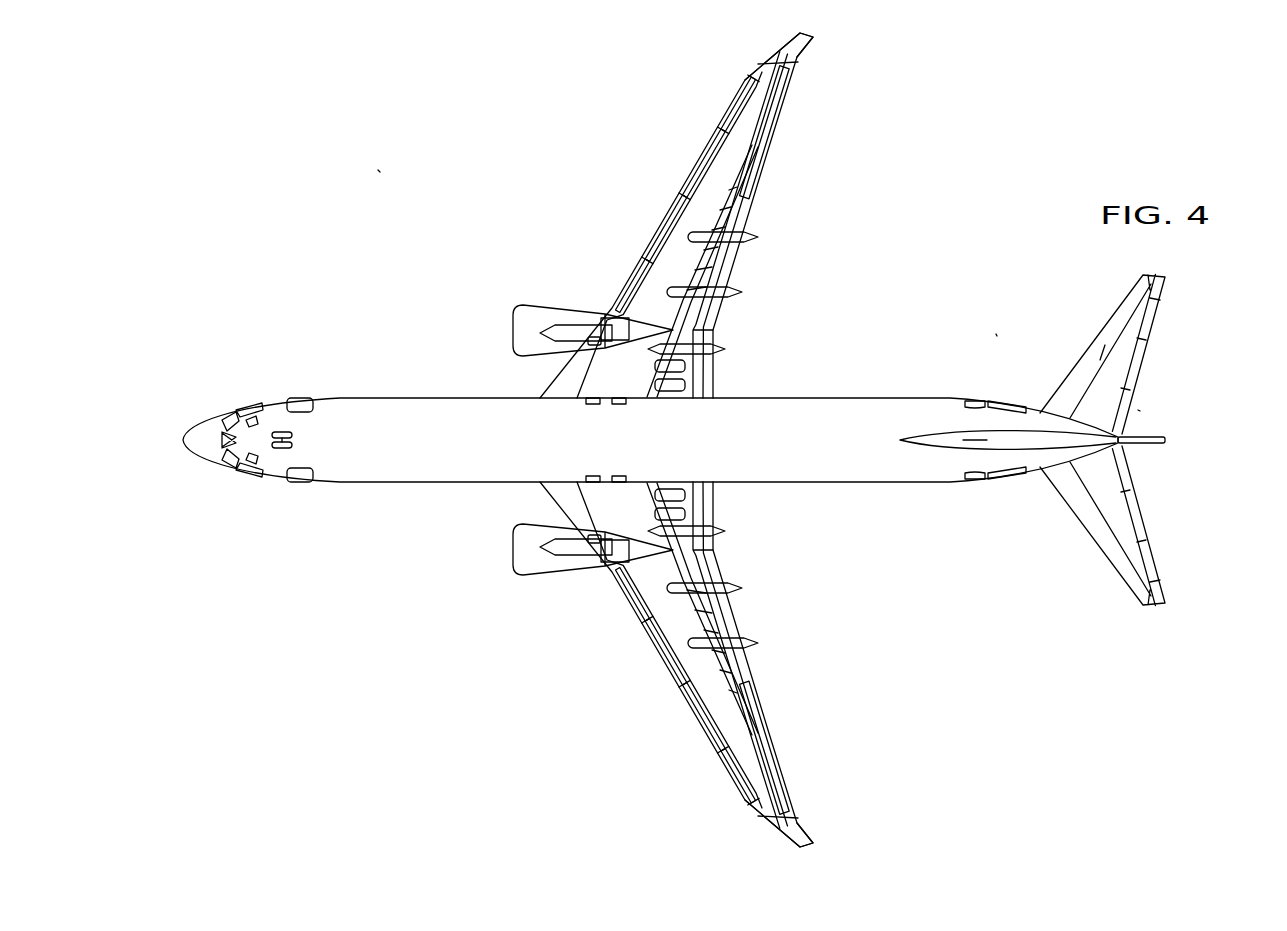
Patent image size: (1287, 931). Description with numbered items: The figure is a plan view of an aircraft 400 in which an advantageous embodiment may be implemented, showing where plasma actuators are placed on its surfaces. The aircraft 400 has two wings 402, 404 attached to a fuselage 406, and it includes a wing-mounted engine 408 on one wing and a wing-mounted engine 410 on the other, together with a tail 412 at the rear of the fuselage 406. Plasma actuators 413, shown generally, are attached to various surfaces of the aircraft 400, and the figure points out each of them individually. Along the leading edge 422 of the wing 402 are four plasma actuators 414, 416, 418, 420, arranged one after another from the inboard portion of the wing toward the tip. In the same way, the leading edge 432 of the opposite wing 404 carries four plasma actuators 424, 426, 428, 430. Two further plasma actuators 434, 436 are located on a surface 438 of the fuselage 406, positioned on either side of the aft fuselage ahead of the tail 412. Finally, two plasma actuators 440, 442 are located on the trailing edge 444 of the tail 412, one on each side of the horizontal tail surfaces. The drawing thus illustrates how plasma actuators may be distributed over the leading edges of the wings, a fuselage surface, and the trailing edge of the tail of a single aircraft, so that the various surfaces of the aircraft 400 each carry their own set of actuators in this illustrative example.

The aircraft 400 is at (378, 170).
The wing 402 is at (773, 141).
The wing 404 is at (775, 788).
The fuselage 406 is at (376, 404).
The wing-mounted engine 408 is at (514, 329).
The wing-mounted engine 410 is at (512, 552).
The tail 412 is at (1101, 355).
The plasma actuators 413 is at (996, 334).
The plasma actuator 414 is at (714, 100).
The plasma actuator 416 is at (688, 162).
The plasma actuator 418 is at (650, 227).
The plasma actuator 420 is at (616, 288).
The leading edge 422 is at (736, 90).
The plasma actuator 424 is at (616, 592).
The plasma actuator 426 is at (650, 653).
The plasma actuator 428 is at (688, 718).
The plasma actuator 430 is at (714, 782).
The leading edge 432 is at (736, 790).
The plasma actuator 434 is at (1007, 404).
The plasma actuator 436 is at (1004, 480).
The surface 438 is at (890, 400).
The plasma actuator 440 is at (1155, 542).
The plasma actuator 442 is at (1158, 336).
The trailing edge 444 is at (1138, 410).